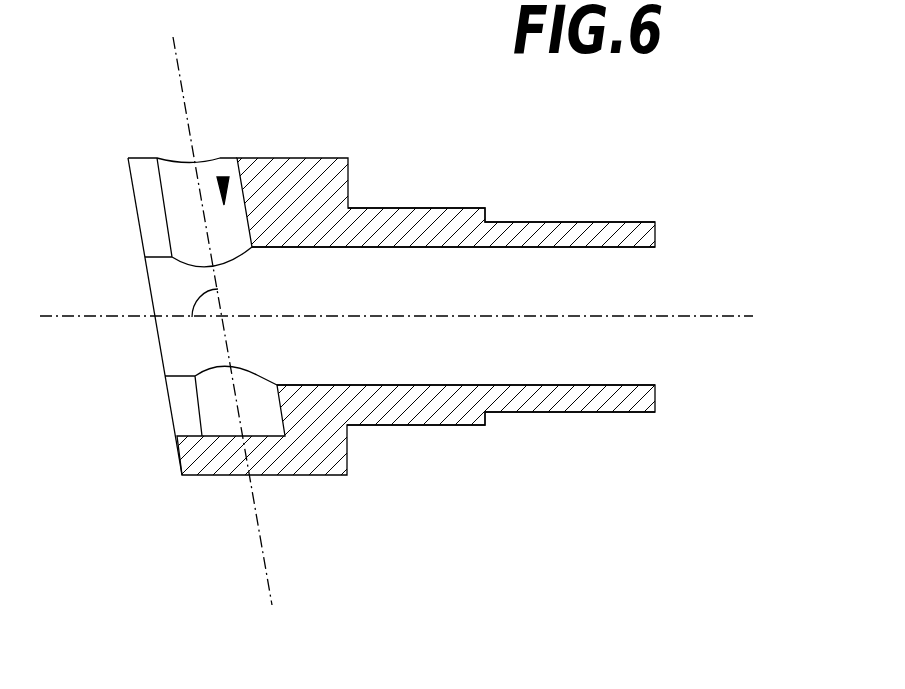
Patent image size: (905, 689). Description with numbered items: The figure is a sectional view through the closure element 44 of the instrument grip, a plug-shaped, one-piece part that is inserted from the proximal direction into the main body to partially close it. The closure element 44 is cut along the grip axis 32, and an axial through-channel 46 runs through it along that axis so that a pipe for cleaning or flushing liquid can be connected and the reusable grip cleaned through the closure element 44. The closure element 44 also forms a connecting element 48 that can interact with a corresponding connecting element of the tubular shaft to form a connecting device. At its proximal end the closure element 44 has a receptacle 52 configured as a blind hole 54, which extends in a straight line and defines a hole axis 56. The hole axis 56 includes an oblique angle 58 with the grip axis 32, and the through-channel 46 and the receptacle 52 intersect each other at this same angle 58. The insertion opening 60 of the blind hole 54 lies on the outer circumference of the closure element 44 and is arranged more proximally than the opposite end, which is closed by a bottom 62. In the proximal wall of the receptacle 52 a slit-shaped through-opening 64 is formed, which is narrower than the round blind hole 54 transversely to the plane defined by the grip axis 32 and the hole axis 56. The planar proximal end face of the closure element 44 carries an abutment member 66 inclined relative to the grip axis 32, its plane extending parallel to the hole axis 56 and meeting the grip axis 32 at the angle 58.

The grip axis 32 is at (722, 317).
The closure element 44 is at (317, 193).
The through-channel 46 is at (558, 277).
The connecting element 48 is at (412, 233).
The receptacle 52 is at (220, 163).
The blind hole 54 is at (175, 188).
The hole axis 56 is at (178, 70).
The angle 58 is at (212, 308).
The insertion opening 60 is at (158, 158).
The bottom 62 is at (226, 437).
The through-opening 64 is at (188, 410).
The abutment member 66 is at (138, 232).